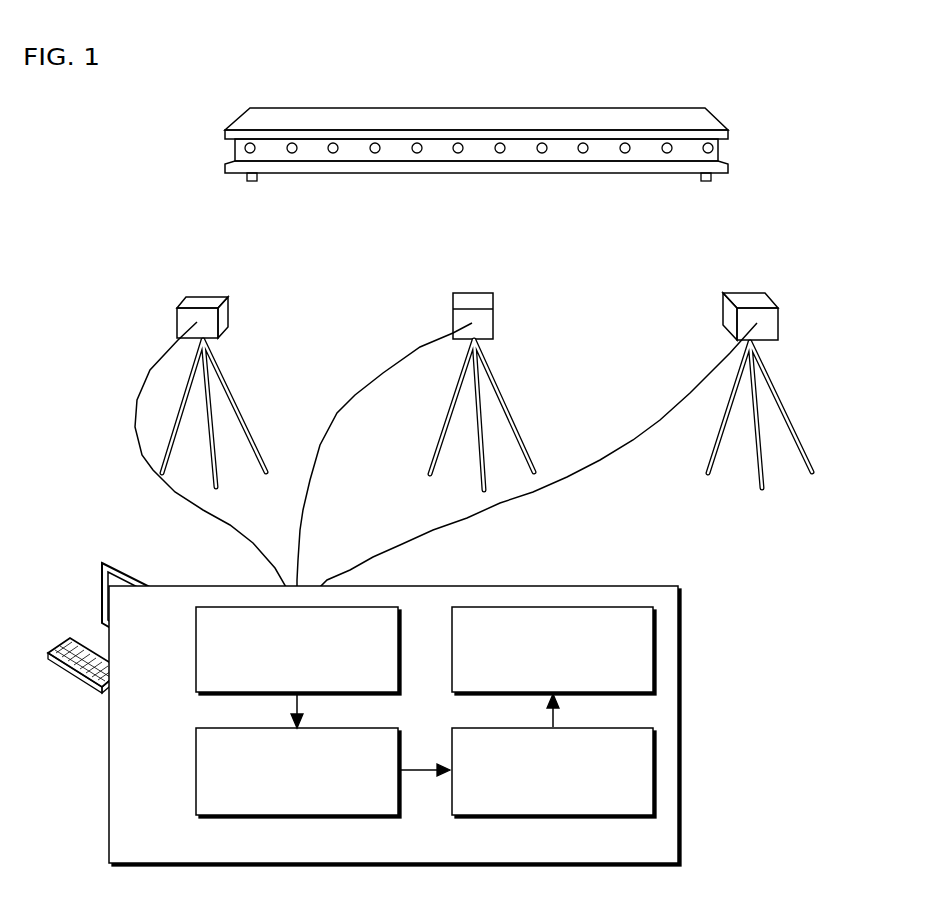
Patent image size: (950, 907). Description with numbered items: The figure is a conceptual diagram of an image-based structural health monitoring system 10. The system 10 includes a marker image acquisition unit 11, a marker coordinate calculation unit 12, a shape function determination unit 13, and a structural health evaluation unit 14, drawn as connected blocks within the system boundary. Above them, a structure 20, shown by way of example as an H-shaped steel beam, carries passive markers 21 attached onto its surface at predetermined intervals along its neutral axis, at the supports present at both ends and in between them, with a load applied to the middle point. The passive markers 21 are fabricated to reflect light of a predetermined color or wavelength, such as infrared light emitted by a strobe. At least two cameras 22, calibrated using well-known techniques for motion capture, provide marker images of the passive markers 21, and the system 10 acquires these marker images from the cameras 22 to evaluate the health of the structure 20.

The image-based structural health monitoring system 10 is at (648, 851).
The marker image acquisition unit 11 is at (287, 683).
The marker coordinate calculation unit 12 is at (286, 807).
The shape function determination unit 13 is at (565, 807).
The structural health evaluation unit 14 is at (565, 683).
The structure 20 is at (718, 116).
The passive markers 21 is at (714, 148).
The cameras 22 is at (772, 299).